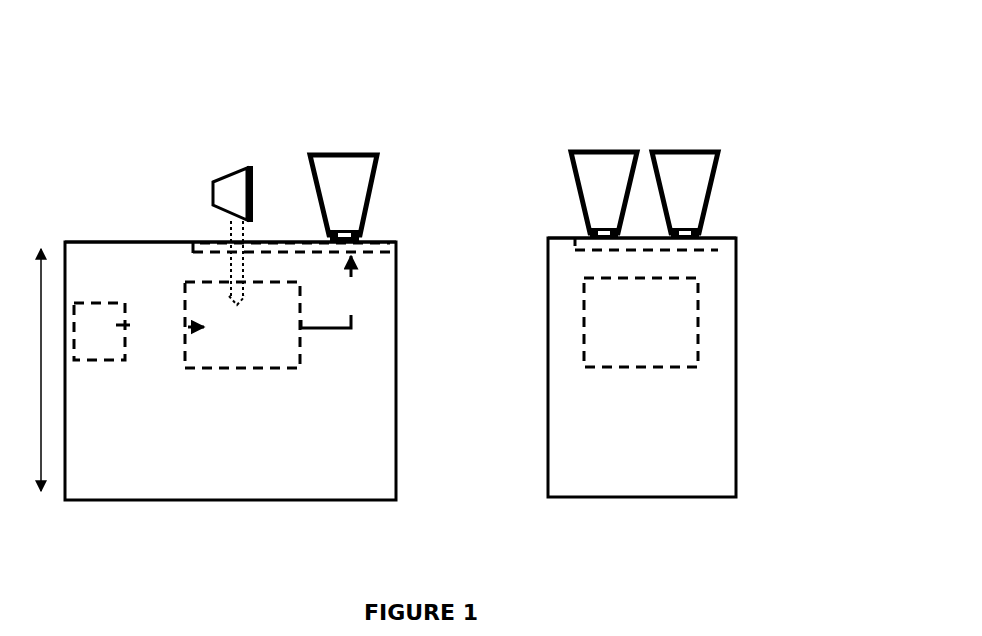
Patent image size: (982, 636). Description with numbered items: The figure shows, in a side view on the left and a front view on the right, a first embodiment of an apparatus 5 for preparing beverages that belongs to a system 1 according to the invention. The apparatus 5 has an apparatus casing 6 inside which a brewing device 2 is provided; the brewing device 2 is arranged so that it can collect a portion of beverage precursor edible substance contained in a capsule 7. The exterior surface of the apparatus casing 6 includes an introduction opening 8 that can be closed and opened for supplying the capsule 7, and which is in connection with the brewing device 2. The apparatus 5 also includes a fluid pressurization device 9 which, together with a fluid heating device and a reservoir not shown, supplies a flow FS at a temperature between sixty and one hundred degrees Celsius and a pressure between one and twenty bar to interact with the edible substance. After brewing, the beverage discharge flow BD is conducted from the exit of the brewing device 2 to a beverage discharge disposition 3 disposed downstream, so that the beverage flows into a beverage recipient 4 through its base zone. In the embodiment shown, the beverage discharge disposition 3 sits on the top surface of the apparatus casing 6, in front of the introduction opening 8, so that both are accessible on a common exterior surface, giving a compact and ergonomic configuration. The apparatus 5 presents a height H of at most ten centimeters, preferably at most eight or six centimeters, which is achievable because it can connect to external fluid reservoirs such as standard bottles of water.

The system 1 is at (387, 265).
The brewing device 2 is at (441, 323).
The beverage discharge disposition 3 is at (384, 233).
The beverage recipient 4 is at (514, 185).
The apparatus for preparing beverages 5 is at (289, 183).
The apparatus casing 6 is at (400, 228).
The capsule 7 is at (233, 226).
The introduction opening 8 is at (455, 232).
The fluid pressurization device 9 is at (102, 317).
The flow FS is at (172, 327).
The beverage discharge flow BD is at (335, 292).
The height H is at (24, 370).